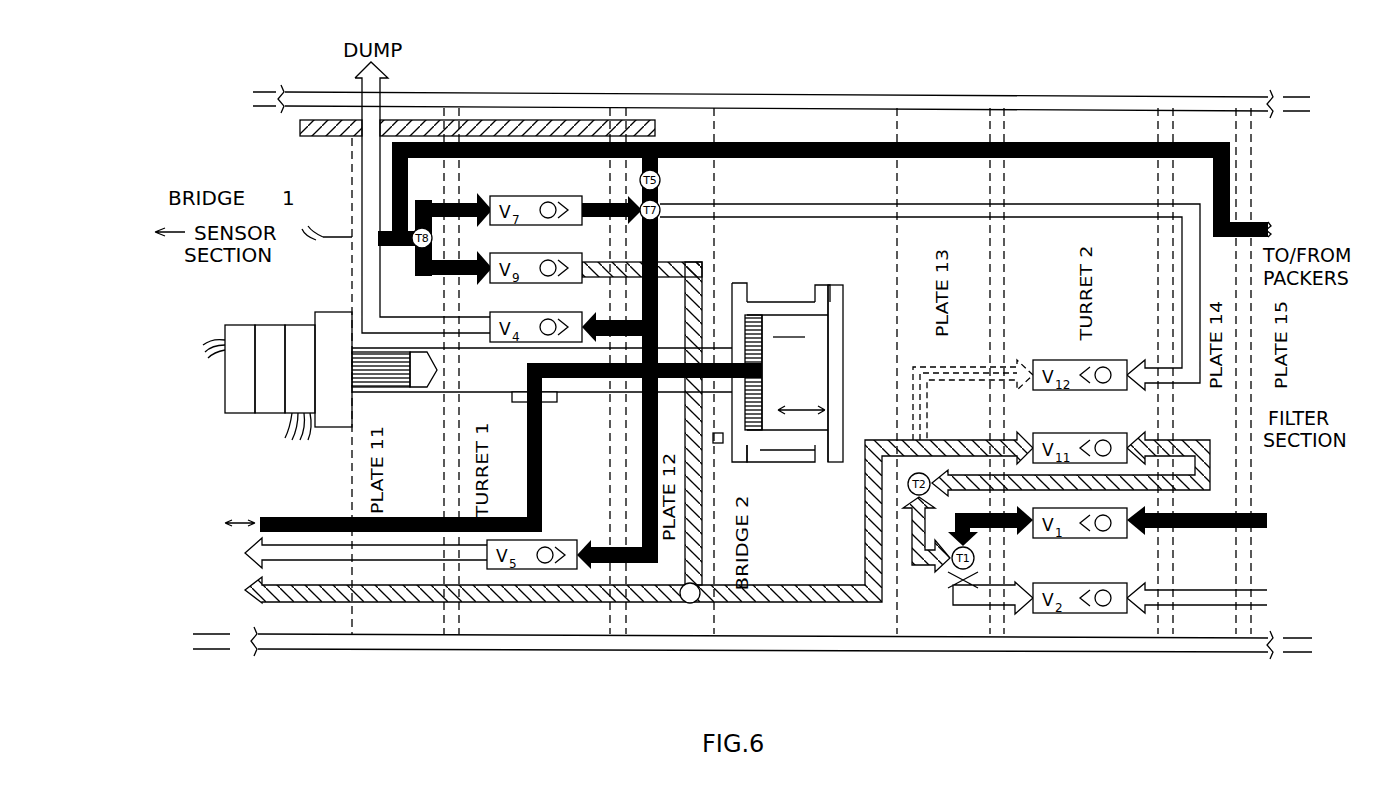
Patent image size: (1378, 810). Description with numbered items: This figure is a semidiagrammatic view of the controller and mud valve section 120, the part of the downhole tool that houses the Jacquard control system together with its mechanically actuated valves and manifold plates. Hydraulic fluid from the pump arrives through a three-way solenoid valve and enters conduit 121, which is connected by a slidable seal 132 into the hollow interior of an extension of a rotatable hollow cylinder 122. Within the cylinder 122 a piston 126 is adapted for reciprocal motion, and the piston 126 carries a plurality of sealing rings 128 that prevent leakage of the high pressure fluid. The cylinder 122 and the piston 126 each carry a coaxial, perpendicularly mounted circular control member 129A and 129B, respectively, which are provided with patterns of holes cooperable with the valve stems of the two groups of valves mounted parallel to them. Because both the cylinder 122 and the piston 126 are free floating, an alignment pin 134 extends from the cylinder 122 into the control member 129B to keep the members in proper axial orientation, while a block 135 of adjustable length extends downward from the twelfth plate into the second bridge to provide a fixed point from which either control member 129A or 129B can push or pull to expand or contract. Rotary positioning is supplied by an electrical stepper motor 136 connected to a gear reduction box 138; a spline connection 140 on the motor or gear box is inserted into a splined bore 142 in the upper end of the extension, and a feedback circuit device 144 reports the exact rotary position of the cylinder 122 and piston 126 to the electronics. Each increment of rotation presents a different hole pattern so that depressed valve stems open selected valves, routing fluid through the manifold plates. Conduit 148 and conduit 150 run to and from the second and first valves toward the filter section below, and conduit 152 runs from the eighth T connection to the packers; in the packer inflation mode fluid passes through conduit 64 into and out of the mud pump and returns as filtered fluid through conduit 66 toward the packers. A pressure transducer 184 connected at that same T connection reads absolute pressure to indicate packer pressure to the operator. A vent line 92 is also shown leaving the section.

The conduit 64 is at (275, 601).
The conduit 66 is at (300, 133).
The vent line 92 is at (253, 560).
The controller and mud valve section 120 is at (814, 69).
The conduit 121 is at (292, 517).
The rotatable hollow cylinder 122 is at (473, 393).
The piston 126 is at (786, 373).
The sealing rings 128 is at (822, 285).
The control member 129A is at (735, 283).
The control member 129B is at (845, 300).
The slidable seal 132 is at (548, 402).
The alignment pin 134 is at (826, 444).
The block 135 is at (720, 443).
The electrical stepper motor 136 is at (308, 325).
The gear reduction box 138 is at (340, 312).
The spline connection 140 is at (385, 383).
The splined bore 142 is at (420, 386).
The feedback circuit device 144 is at (246, 413).
The conduit 148 is at (1256, 594).
The conduit 150 is at (1256, 516).
The conduit 152 is at (1256, 222).
The pressure transducer 184 is at (295, 173).